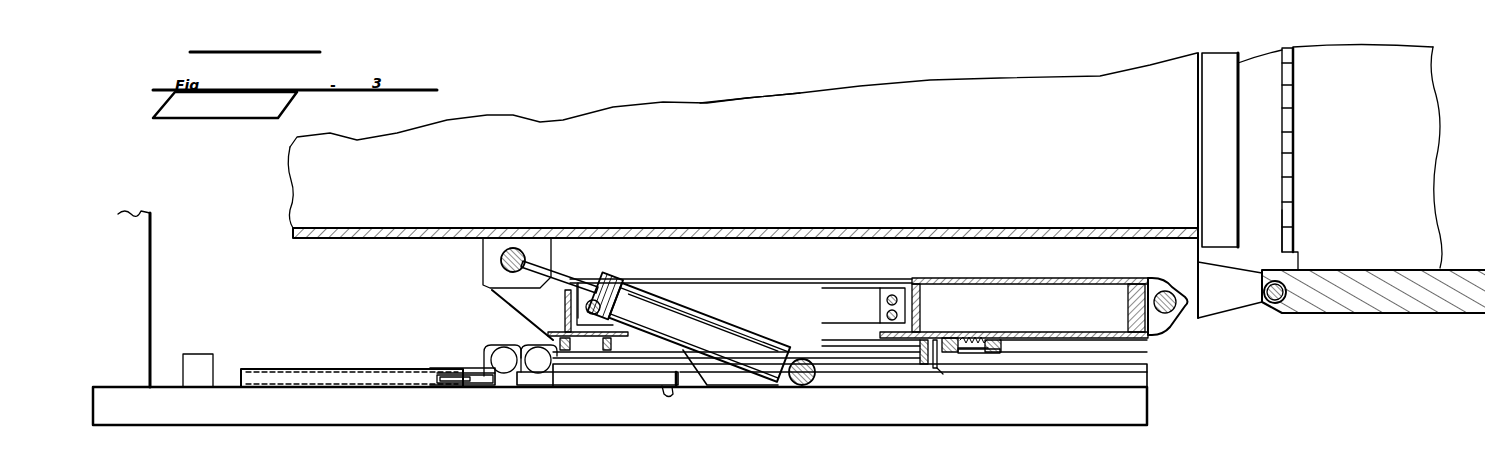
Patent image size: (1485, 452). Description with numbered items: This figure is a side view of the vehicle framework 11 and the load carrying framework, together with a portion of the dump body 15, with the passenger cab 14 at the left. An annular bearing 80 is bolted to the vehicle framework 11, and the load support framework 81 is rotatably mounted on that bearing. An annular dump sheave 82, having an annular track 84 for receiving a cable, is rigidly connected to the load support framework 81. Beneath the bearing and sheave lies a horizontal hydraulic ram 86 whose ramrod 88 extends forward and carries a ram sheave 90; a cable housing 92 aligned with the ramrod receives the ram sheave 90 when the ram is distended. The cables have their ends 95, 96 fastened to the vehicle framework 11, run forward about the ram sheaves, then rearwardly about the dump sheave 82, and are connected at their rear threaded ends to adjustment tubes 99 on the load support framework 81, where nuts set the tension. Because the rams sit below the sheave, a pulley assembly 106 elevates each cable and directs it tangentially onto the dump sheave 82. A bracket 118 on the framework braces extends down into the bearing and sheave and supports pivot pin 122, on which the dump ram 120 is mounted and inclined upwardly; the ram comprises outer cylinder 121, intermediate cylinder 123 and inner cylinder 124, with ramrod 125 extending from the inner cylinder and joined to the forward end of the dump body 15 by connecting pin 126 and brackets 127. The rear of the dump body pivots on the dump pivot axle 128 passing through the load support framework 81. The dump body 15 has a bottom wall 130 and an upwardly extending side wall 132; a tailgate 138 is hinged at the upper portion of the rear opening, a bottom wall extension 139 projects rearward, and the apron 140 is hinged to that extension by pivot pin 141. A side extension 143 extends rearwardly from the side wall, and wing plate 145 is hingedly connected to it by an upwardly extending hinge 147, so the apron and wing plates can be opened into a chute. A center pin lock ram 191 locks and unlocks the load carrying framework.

The vehicle framework 11 is at (278, 410).
The passenger cab 14 is at (150, 283).
The dump body 15 is at (1088, 88).
The annular bearing 80 is at (610, 360).
The load support framework 81 is at (1108, 320).
The annular dump sheave 82 is at (569, 360).
The annular track 84 is at (548, 333).
The hydraulic ram 86 is at (632, 382).
The ramrod 88 is at (514, 384).
The ram sheave 90 is at (470, 385).
The cable housing 92 is at (306, 368).
The cable end 95 is at (1002, 340).
The cable end 96 is at (976, 337).
The adjustment tube 99 is at (992, 351).
The pulley assembly 106 is at (491, 346).
The bracket 118 is at (737, 378).
The dump ram 120 is at (712, 316).
The outer cylinder 121 is at (752, 337).
The pivot pin 122 is at (807, 387).
The intermediate cylinder 123 is at (624, 283).
The inner cylinder 124 is at (605, 286).
The ramrod 125 is at (575, 280).
The connecting pin 126 is at (502, 268).
The bracket 127 is at (485, 259).
The dump pivot axle 128 is at (1168, 316).
The bottom wall 130 is at (912, 226).
The side wall 132 is at (750, 100).
The tailgate 138 is at (1232, 117).
The bottom wall extension 139 is at (1228, 310).
The apron 140 is at (1376, 318).
The pivot pin 141 is at (1276, 306).
The side extension 143 is at (1275, 210).
The wing plate 145 is at (1430, 78).
The hinge 147 is at (1295, 143).
The center pin lock ram 191 is at (935, 372).